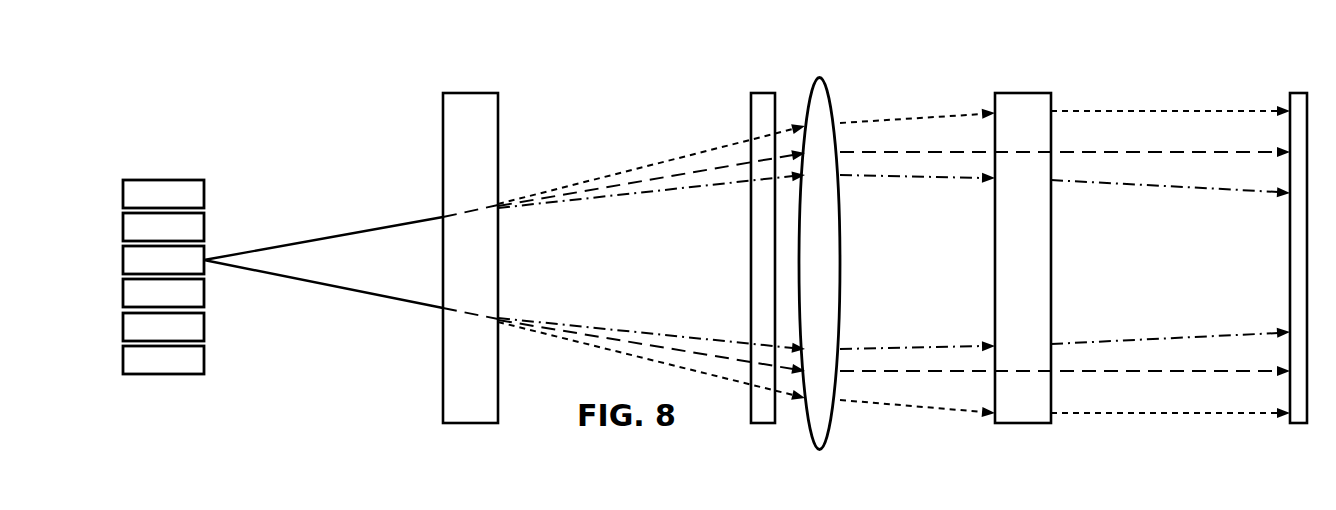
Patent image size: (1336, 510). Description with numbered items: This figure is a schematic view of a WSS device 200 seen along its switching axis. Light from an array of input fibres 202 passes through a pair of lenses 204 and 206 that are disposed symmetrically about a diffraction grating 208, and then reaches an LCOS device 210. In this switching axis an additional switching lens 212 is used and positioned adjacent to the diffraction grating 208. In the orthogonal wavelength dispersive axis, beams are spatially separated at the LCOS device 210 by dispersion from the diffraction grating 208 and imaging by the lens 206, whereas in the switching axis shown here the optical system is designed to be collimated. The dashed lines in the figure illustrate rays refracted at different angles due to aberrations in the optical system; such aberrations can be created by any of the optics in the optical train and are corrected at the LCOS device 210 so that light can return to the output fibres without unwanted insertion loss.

The WSS device 200 is at (601, 68).
The array of input fibres 202 is at (178, 184).
The lens 204 is at (443, 120).
The imaging lens 206 is at (995, 133).
The diffraction grating 208 is at (751, 97).
The LCOS device 210 is at (1292, 120).
The switching lens 212 is at (818, 77).